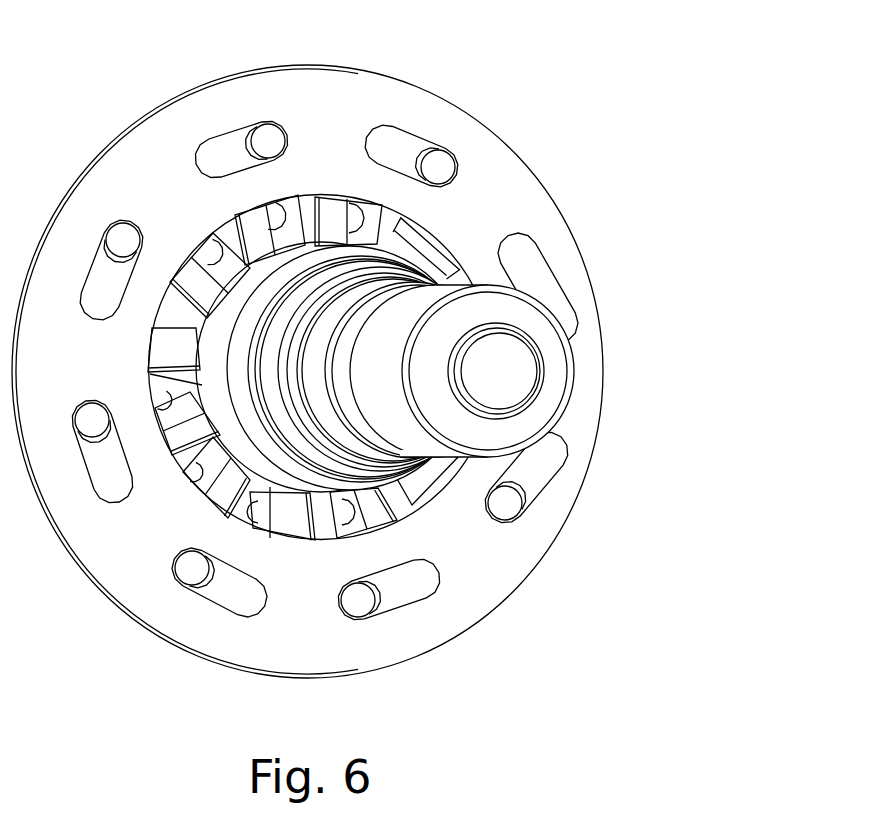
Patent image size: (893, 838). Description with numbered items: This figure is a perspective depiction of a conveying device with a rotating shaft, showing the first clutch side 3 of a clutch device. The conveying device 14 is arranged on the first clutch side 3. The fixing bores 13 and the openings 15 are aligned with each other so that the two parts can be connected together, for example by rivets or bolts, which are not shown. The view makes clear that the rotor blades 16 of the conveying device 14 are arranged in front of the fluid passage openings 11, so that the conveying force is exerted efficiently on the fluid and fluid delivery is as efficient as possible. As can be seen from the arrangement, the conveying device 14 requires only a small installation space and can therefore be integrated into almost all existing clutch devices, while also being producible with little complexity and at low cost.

The first clutch side 3 is at (430, 296).
The fluid passage openings 11 is at (352, 213).
The fixing bores 13 is at (372, 609).
The conveying device 14 is at (488, 582).
The openings 15 is at (428, 598).
The rotor blades 16 is at (332, 215).